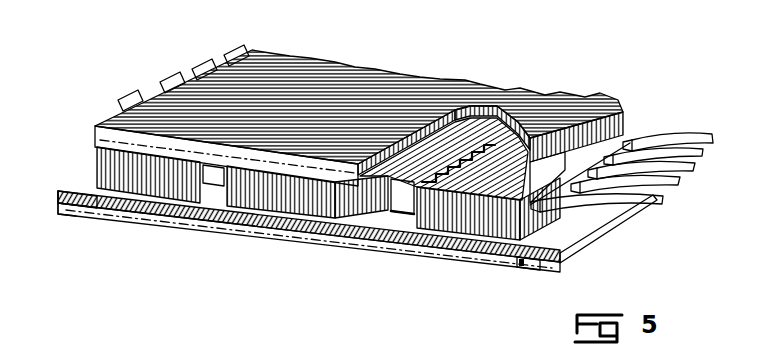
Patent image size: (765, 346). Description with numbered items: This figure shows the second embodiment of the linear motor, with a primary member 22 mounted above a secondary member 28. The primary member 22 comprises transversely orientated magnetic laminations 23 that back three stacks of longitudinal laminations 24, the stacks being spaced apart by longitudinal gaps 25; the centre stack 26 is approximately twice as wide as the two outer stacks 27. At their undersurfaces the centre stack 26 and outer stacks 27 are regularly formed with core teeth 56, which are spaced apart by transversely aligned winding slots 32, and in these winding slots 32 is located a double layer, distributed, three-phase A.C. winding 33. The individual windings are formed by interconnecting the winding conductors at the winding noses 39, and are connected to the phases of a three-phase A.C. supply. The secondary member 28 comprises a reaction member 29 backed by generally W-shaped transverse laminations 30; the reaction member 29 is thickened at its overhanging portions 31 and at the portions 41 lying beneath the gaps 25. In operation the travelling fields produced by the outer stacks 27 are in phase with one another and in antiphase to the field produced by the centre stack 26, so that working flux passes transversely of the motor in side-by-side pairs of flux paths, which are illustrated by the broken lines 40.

The primary member 22 is at (296, 80).
The transversely orientated magnetic laminations 23 is at (590, 112).
The longitudinal laminations 24 is at (100, 172).
The longitudinal gaps 25 is at (213, 167).
The centre stack 26 is at (273, 197).
The outer stacks 27 is at (118, 188).
The secondary member 28 is at (135, 226).
The reaction member 29 is at (80, 209).
The transverse laminations 30 is at (524, 265).
The overhanging portions 31 is at (97, 172).
The winding slots 32 is at (628, 140).
The three-phase A.C. winding 33 is at (600, 212).
The winding noses 39 is at (652, 200).
The broken lines 40 is at (165, 216).
The portions beneath the gaps 41 is at (225, 225).
The core teeth 56 is at (185, 205).